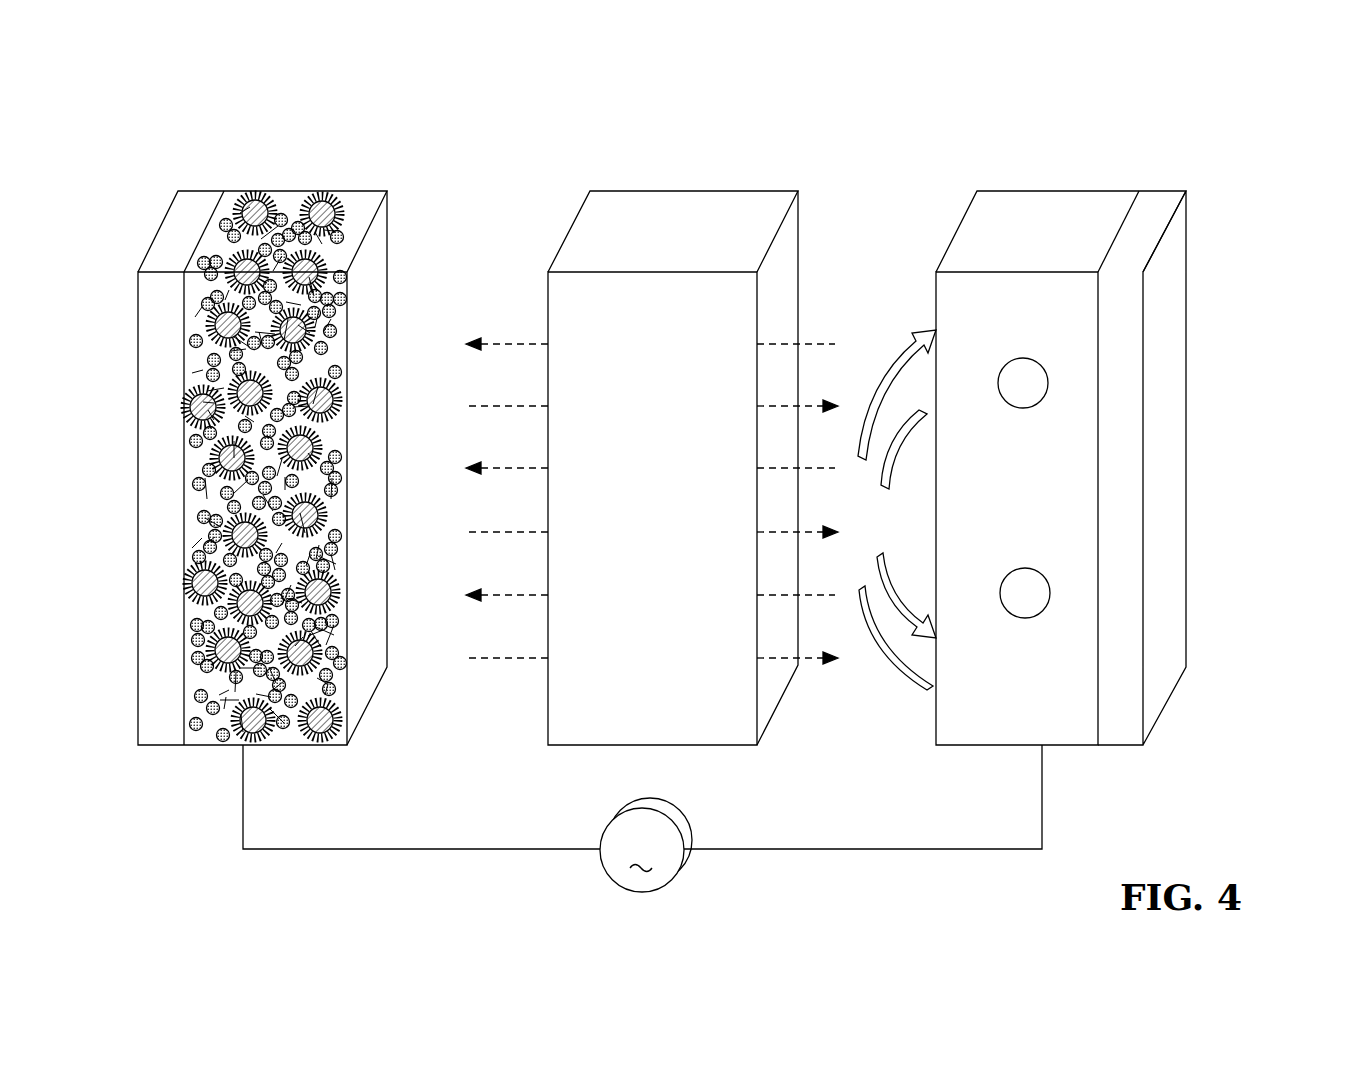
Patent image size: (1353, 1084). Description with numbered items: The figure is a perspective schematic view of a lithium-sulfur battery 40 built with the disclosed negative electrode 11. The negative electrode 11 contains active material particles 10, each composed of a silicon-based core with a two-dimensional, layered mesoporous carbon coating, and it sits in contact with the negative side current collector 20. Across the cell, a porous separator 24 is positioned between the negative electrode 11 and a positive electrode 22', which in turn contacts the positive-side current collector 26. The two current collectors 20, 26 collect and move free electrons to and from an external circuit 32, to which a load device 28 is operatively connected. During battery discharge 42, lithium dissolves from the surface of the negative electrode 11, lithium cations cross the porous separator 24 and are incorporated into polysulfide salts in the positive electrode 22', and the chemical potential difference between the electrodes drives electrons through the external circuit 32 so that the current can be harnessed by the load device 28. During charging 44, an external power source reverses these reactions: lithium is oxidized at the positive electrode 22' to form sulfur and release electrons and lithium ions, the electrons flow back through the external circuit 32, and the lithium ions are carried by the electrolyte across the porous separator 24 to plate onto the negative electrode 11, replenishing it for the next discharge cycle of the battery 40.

The active material particles 10 is at (346, 737).
The negative electrode 11 is at (300, 191).
The negative side current collector 20 is at (162, 487).
The positive electrode 22' is at (1100, 438).
The porous separator 24 is at (663, 191).
The positive-side current collector 26 is at (1163, 302).
The load device 28 is at (648, 845).
The external circuit 32 is at (929, 849).
The lithium-sulfur battery 40 is at (1199, 136).
The battery discharge 42 is at (804, 401).
The battery charging 44 is at (513, 338).